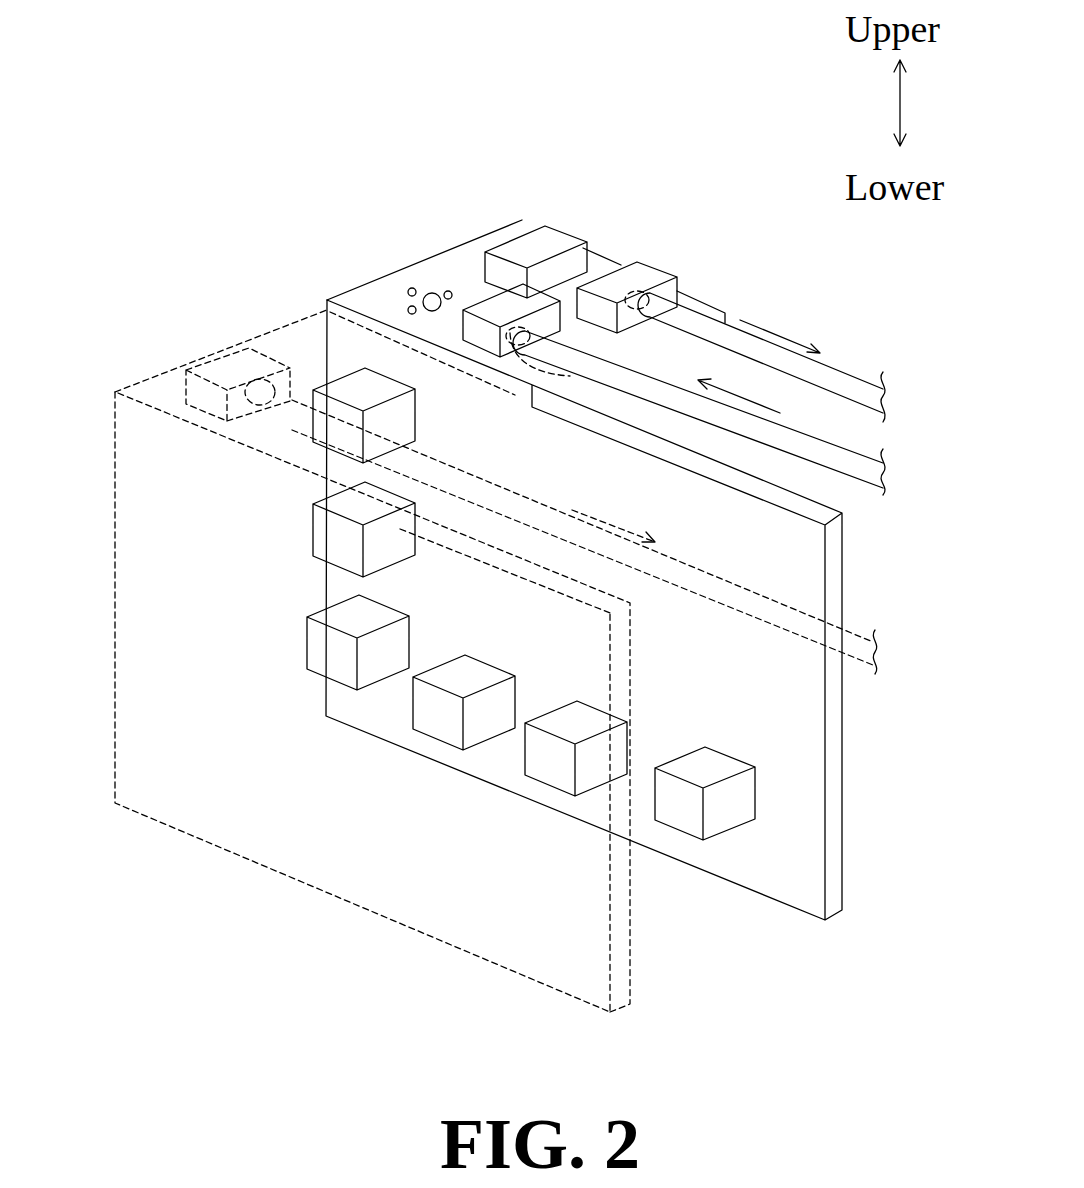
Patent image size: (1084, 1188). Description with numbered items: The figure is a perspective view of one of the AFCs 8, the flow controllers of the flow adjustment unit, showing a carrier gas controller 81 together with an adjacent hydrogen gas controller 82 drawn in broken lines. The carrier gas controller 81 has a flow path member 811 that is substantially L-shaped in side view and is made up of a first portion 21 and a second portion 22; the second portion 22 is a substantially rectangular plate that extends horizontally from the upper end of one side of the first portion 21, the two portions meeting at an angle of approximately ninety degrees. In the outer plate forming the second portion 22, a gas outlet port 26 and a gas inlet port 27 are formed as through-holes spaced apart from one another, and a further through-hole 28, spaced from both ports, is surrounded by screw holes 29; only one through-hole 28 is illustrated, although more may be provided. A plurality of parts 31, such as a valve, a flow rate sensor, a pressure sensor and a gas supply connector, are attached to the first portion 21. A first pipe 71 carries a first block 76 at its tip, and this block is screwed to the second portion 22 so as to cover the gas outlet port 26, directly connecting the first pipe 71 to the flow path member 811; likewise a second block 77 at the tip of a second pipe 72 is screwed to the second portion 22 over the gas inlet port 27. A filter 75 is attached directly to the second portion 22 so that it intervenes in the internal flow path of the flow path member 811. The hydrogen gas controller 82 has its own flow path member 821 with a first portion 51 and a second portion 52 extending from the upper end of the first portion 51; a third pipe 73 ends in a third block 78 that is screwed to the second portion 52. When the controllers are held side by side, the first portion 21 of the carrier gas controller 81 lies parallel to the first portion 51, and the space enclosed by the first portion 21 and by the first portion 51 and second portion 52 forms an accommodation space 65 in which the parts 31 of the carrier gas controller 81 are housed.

The AFC (flow controller) 8 is at (412, 243).
The first portion 21 is at (836, 806).
The second portion 22 is at (432, 260).
The gas outlet port 26 is at (620, 262).
The gas inlet port 27 is at (575, 378).
The through-hole 28 is at (435, 287).
The screw holes 29 is at (422, 305).
The parts 31 is at (307, 612).
The first portion 51 is at (227, 850).
The second portion 52 is at (150, 378).
The accommodation space 65 is at (662, 886).
The first pipe 71 is at (853, 376).
The second pipe 72 is at (856, 490).
The third pipe 73 is at (765, 622).
The filter 75 is at (530, 290).
The first block 76 is at (652, 260).
The second block 77 is at (586, 258).
The third block 78 is at (208, 413).
The carrier gas controller 81 is at (411, 230).
The flow path member 811 is at (484, 230).
The hydrogen gas controller 82 is at (160, 340).
The flow path member 821 is at (270, 330).